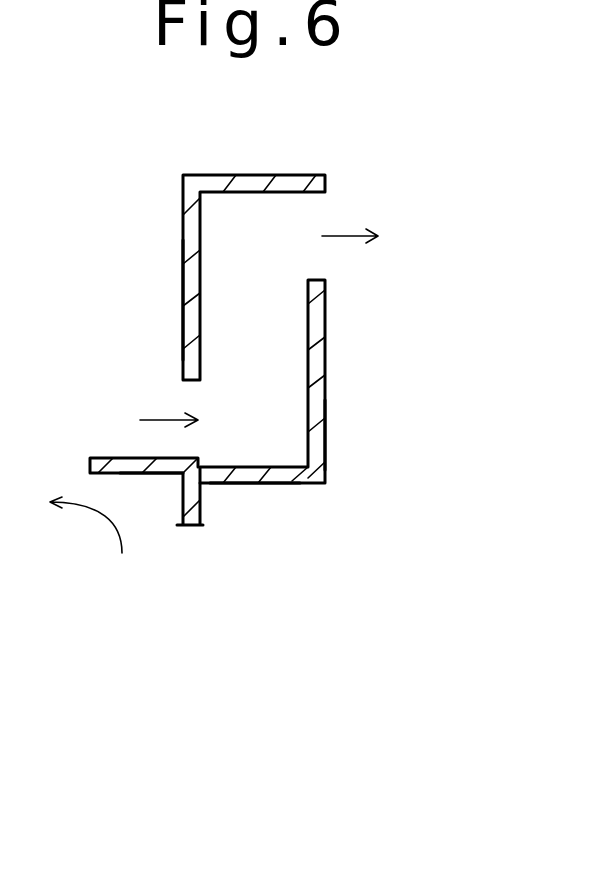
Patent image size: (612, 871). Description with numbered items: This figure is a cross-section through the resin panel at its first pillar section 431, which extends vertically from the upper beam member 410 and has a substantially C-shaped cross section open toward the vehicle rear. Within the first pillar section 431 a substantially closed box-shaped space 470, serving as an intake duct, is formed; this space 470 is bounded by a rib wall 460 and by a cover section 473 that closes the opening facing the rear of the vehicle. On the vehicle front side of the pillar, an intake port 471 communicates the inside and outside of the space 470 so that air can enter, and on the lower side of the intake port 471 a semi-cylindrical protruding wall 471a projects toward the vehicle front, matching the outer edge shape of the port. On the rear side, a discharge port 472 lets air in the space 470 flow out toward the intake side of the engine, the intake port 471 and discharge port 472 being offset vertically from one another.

The upper beam member 410 is at (265, 175).
The first pillar section 431 is at (198, 296).
The discharge port 472 is at (323, 213).
The box-shaped space 470 is at (285, 362).
The cover section 473 is at (323, 428).
The rib wall 460 is at (280, 484).
The intake port 471 is at (181, 401).
The protruding wall 471a is at (160, 475).